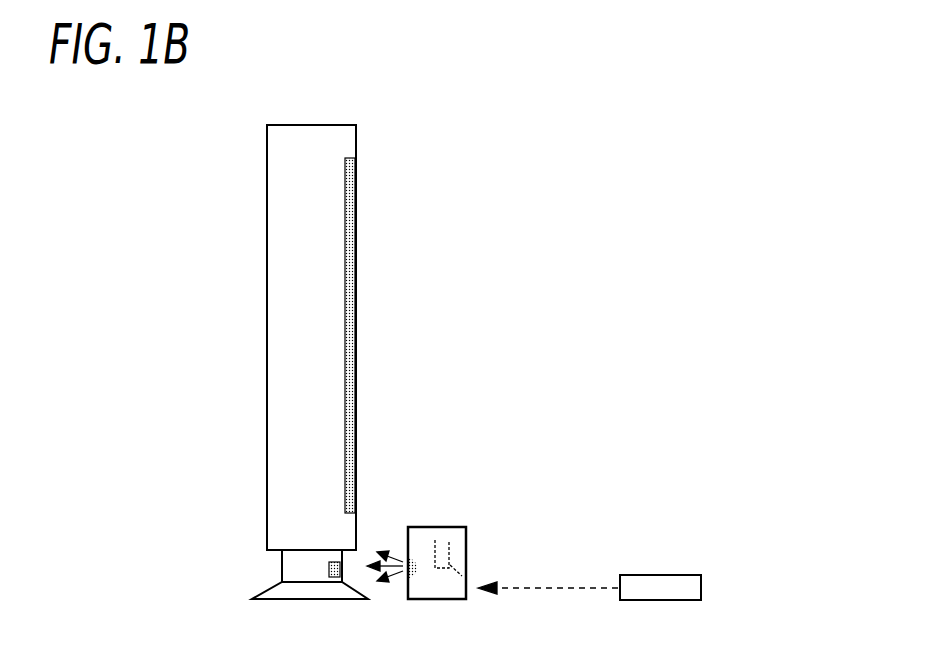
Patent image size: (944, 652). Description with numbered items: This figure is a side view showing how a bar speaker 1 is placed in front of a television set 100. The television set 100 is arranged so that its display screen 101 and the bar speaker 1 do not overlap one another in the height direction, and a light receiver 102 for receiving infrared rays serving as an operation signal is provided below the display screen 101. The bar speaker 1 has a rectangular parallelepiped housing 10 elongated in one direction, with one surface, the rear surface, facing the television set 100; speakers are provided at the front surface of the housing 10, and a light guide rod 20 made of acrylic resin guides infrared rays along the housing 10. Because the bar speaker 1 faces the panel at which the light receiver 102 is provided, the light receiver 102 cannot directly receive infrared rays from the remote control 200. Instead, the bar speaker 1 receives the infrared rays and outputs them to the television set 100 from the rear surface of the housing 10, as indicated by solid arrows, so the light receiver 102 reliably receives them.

The television set 100 is at (266, 126).
The display screen 101 is at (356, 176).
The light receiver 102 is at (330, 571).
The bar speaker 1 is at (501, 543).
The housing 10 is at (458, 600).
The light guide rod 20 is at (411, 590).
The remote control 200 is at (694, 575).